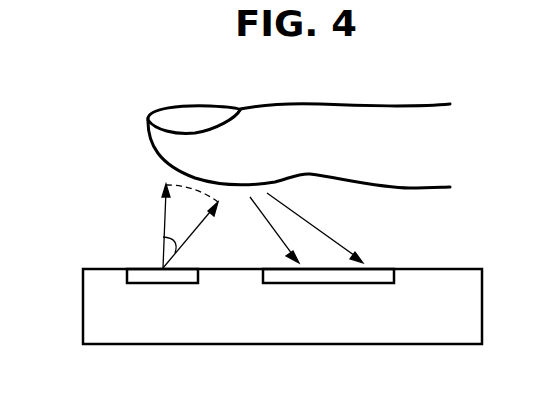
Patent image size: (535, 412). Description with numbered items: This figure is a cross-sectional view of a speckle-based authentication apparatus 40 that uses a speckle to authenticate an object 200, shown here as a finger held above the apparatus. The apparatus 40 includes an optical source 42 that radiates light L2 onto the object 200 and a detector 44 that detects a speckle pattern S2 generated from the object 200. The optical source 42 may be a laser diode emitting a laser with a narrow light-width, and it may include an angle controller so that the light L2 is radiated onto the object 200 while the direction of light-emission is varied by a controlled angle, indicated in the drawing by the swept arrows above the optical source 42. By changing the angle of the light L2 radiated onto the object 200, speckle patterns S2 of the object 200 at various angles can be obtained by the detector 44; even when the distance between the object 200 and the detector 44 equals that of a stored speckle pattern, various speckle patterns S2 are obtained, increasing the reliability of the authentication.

The object 200 is at (282, 115).
The speckle-based authentication apparatus 40 is at (90, 316).
The optical source 42 is at (167, 285).
The detector 44 is at (332, 285).
The light L2 is at (180, 222).
The speckle pattern S2 is at (295, 232).